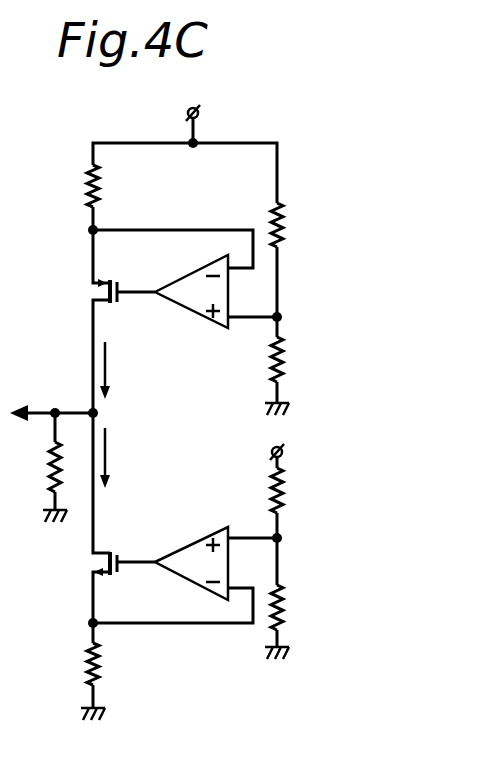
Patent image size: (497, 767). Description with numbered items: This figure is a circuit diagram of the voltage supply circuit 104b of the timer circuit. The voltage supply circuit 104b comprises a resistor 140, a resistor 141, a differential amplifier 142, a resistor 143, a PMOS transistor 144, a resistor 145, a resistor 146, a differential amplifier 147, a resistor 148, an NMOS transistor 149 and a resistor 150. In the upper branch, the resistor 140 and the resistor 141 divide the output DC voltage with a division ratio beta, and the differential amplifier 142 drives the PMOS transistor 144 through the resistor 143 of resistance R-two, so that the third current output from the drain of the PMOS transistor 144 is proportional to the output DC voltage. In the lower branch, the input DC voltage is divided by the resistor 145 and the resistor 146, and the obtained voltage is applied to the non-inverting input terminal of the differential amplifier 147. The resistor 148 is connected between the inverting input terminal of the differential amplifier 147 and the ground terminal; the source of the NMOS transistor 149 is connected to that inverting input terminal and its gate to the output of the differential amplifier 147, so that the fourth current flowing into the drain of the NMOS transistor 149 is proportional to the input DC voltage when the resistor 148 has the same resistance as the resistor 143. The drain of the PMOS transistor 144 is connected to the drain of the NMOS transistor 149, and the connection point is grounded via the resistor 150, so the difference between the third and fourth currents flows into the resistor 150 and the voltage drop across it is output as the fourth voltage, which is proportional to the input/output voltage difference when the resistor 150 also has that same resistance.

The voltage supply circuit 104b is at (197, 419).
The resistor 140 is at (289, 229).
The resistor 141 is at (288, 366).
The differential amplifier 142 is at (187, 307).
The resistor 143 is at (107, 192).
The PMOS transistor 144 is at (110, 308).
The resistor 145 is at (288, 499).
The resistor 146 is at (288, 598).
The differential amplifier 147 is at (203, 532).
The resistor 148 is at (103, 660).
The NMOS transistor 149 is at (110, 545).
The resistor 150 is at (43, 475).